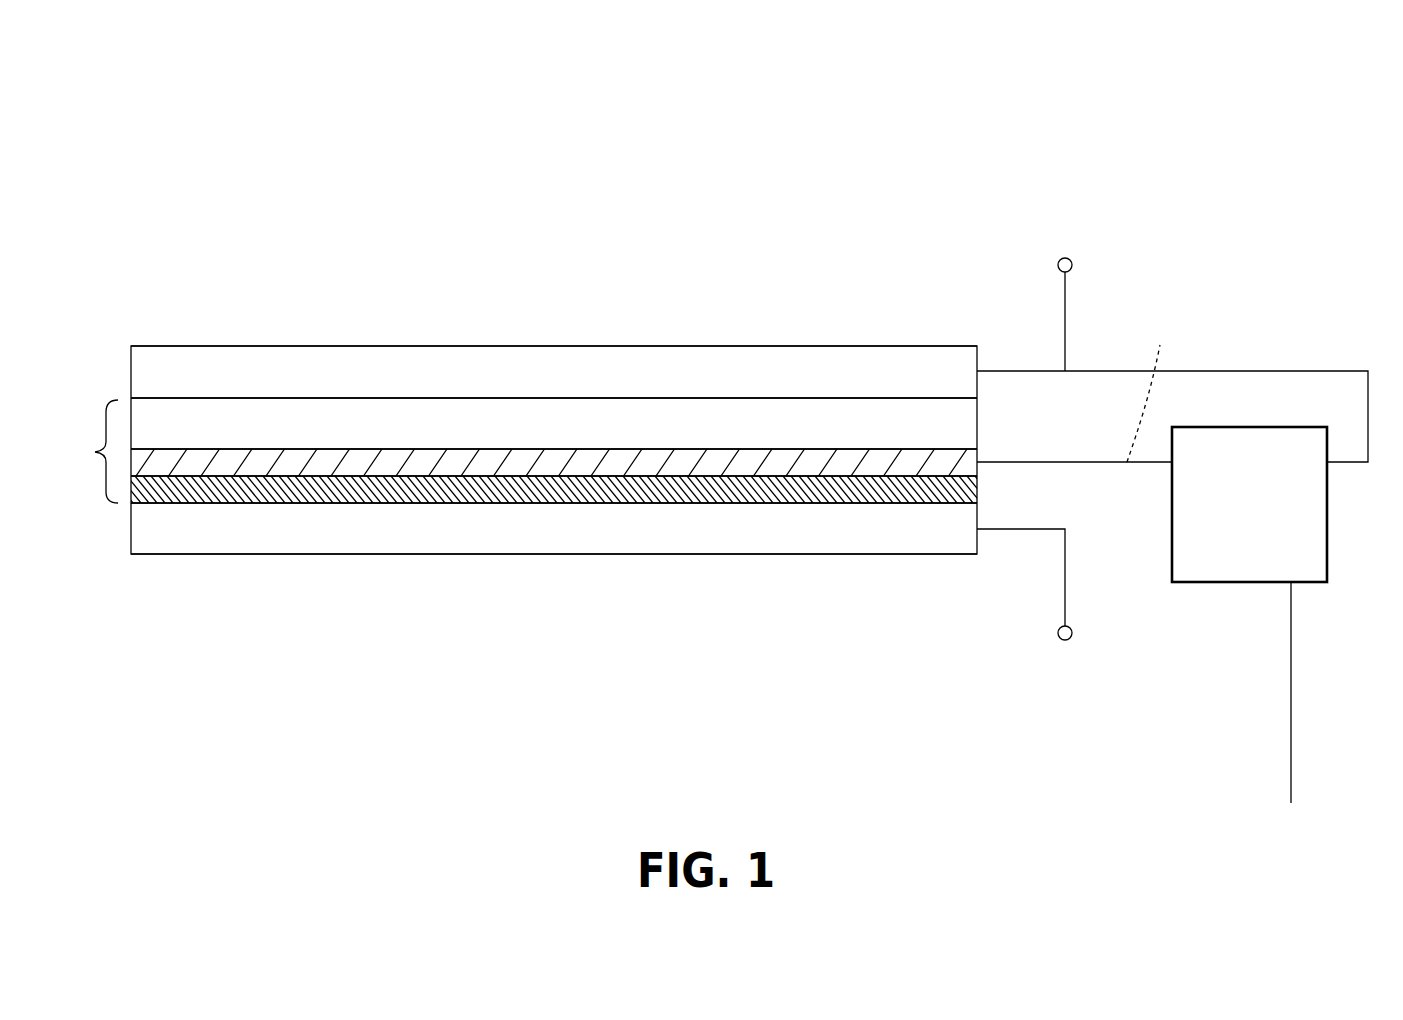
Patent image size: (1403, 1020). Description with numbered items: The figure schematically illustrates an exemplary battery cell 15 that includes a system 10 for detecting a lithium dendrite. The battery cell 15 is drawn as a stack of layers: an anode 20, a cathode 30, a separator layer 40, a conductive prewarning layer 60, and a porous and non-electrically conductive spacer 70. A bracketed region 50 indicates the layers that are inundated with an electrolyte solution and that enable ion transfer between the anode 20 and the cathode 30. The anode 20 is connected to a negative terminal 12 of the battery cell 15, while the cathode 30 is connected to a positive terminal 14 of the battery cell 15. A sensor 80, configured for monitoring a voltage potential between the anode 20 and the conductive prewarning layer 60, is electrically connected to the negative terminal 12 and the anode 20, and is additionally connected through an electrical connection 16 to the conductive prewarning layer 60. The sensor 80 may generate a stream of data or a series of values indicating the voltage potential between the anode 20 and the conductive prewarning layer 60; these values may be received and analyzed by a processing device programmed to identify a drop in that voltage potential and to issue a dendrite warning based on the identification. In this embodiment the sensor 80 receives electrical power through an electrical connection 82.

The system for detecting a lithium dendrite 10 is at (1053, 124).
The negative terminal 12 is at (1072, 263).
The positive terminal 14 is at (1072, 636).
The battery cell 15 is at (690, 346).
The electrical connection 16 is at (1151, 387).
The anode 20 is at (467, 365).
The cathode 30 is at (559, 540).
The separator layer 40 is at (777, 503).
The region 50 is at (92, 451).
The conductive prewarning layer 60 is at (857, 455).
The porous and non-electrically conductive spacer 70 is at (235, 412).
The sensor 80 is at (1249, 504).
The electrical connection 82 is at (1291, 720).